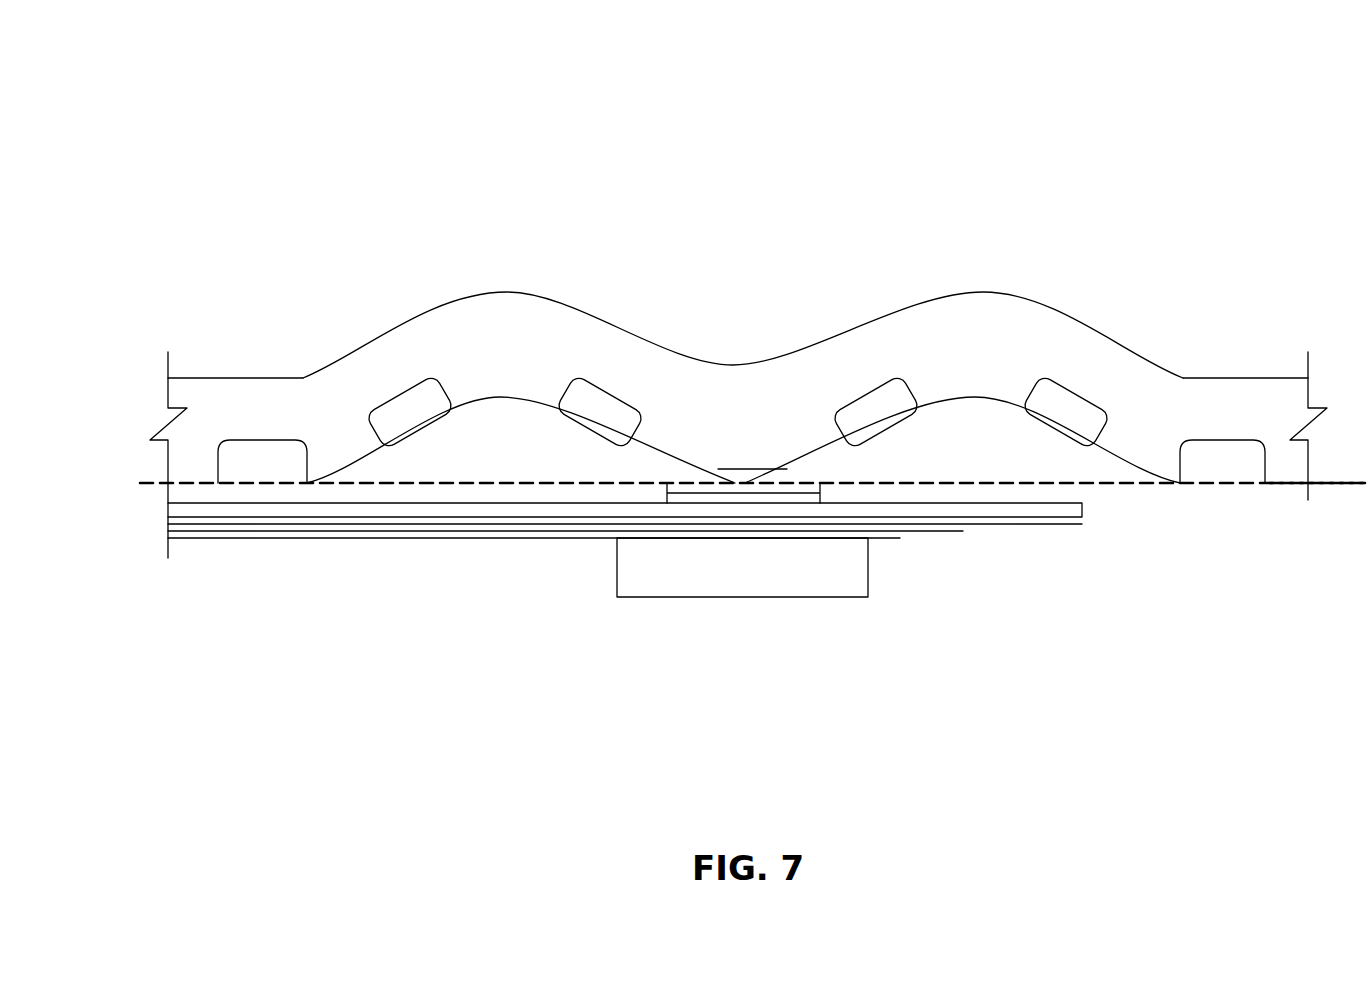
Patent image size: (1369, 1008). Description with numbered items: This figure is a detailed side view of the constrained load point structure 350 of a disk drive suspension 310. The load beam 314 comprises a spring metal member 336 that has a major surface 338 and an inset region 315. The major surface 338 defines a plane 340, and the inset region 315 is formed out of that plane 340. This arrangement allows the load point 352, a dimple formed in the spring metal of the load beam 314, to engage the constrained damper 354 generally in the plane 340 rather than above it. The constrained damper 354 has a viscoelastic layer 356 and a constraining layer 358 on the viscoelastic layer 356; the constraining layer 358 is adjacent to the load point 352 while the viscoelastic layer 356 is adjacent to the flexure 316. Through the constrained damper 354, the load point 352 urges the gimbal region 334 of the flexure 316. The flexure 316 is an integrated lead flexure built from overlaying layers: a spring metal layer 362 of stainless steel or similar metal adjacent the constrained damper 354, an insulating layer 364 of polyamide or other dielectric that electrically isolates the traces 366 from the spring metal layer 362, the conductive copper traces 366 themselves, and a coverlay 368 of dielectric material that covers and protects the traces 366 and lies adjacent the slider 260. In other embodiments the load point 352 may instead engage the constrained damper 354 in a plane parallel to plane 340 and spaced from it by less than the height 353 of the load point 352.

The disk drive suspension 310 is at (558, 185).
The inset region 315 is at (775, 303).
The constrained load point structure 350 is at (775, 430).
The height 353 is at (747, 481).
The spring metal member 336 is at (231, 398).
The load beam 314 is at (260, 398).
The major surface 338 is at (257, 483).
The plane 340 is at (1285, 483).
The flexure 316 is at (463, 522).
The gimbal region 334 is at (568, 563).
The slider 260 is at (742, 567).
The viscoelastic layer 356 is at (683, 498).
The constraining layer 358 is at (712, 487).
The load point 352 is at (787, 472).
The constrained damper 354 is at (827, 491).
The spring metal layer 362 is at (987, 512).
The insulating layer 364 is at (1072, 520).
The traces 366 is at (963, 530).
The coverlay 368 is at (900, 538).